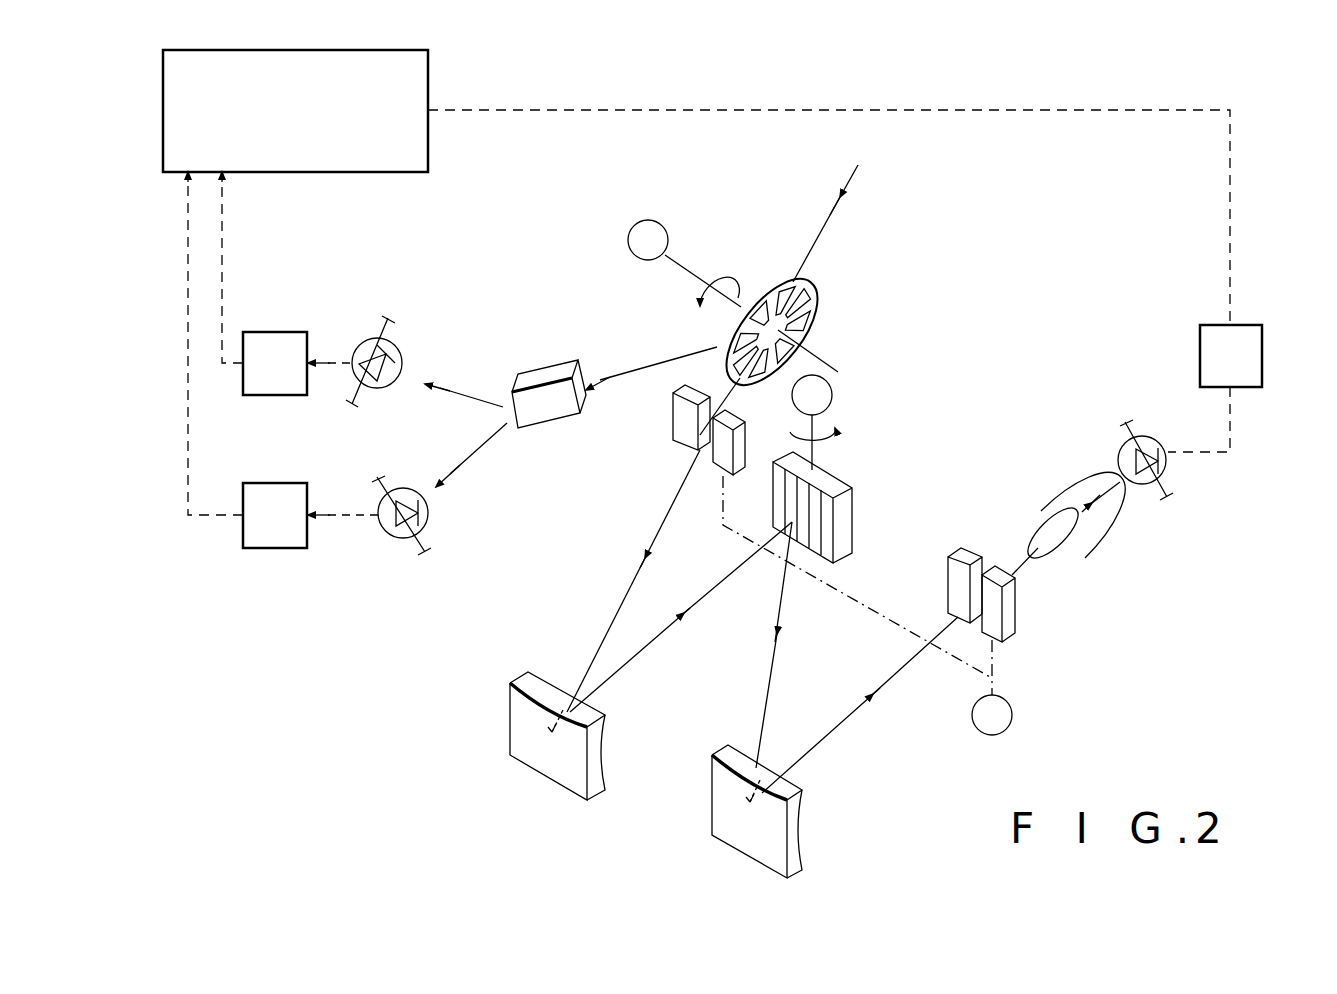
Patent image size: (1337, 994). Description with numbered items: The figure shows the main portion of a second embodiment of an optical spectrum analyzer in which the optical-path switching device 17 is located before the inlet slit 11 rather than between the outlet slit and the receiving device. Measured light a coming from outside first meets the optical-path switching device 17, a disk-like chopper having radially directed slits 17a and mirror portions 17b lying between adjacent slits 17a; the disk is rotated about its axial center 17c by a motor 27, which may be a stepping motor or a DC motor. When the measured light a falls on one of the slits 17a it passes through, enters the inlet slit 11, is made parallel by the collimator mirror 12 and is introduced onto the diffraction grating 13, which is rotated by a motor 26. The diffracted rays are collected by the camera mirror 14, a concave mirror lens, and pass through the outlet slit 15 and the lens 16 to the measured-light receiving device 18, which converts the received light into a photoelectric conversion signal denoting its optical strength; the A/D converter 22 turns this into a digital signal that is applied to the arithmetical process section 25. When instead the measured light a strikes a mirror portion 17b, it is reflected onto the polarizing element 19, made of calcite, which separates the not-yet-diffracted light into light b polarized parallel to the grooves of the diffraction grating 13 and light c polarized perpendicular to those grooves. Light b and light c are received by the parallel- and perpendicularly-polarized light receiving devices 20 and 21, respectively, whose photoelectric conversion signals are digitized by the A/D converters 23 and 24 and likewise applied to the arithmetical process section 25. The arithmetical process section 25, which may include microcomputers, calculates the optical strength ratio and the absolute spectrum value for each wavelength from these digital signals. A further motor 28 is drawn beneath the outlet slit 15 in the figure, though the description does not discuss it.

The inlet slit 11 is at (673, 422).
The collimator mirror 12 is at (525, 757).
The diffraction grating 13 is at (845, 482).
The camera mirror 14 is at (718, 835).
The outlet slit 15 is at (1010, 640).
The lens 16 is at (1065, 560).
The optical-path switching device 17 is at (794, 315).
The slits 17a is at (810, 302).
The mirror portions 17b is at (778, 280).
The axial center 17c is at (700, 275).
The measured-light receiving device 18 is at (1160, 440).
The polarizing element 19 is at (550, 372).
The parallel-polarized light receiving device 20 is at (402, 538).
The perpendicularly-polarized light receiving device 21 is at (398, 352).
The A/D converter 22 is at (1262, 340).
The A/D converter 23 is at (275, 548).
The A/D converter 24 is at (275, 332).
The arithmetical process section 25 is at (430, 79).
The motor 26 is at (833, 386).
The motor 27 is at (630, 232).
The motor for slit 28 is at (1012, 722).
The measured light a is at (838, 200).
The parallel-polarized light b is at (482, 450).
The perpendicularly-polarized light c is at (480, 400).